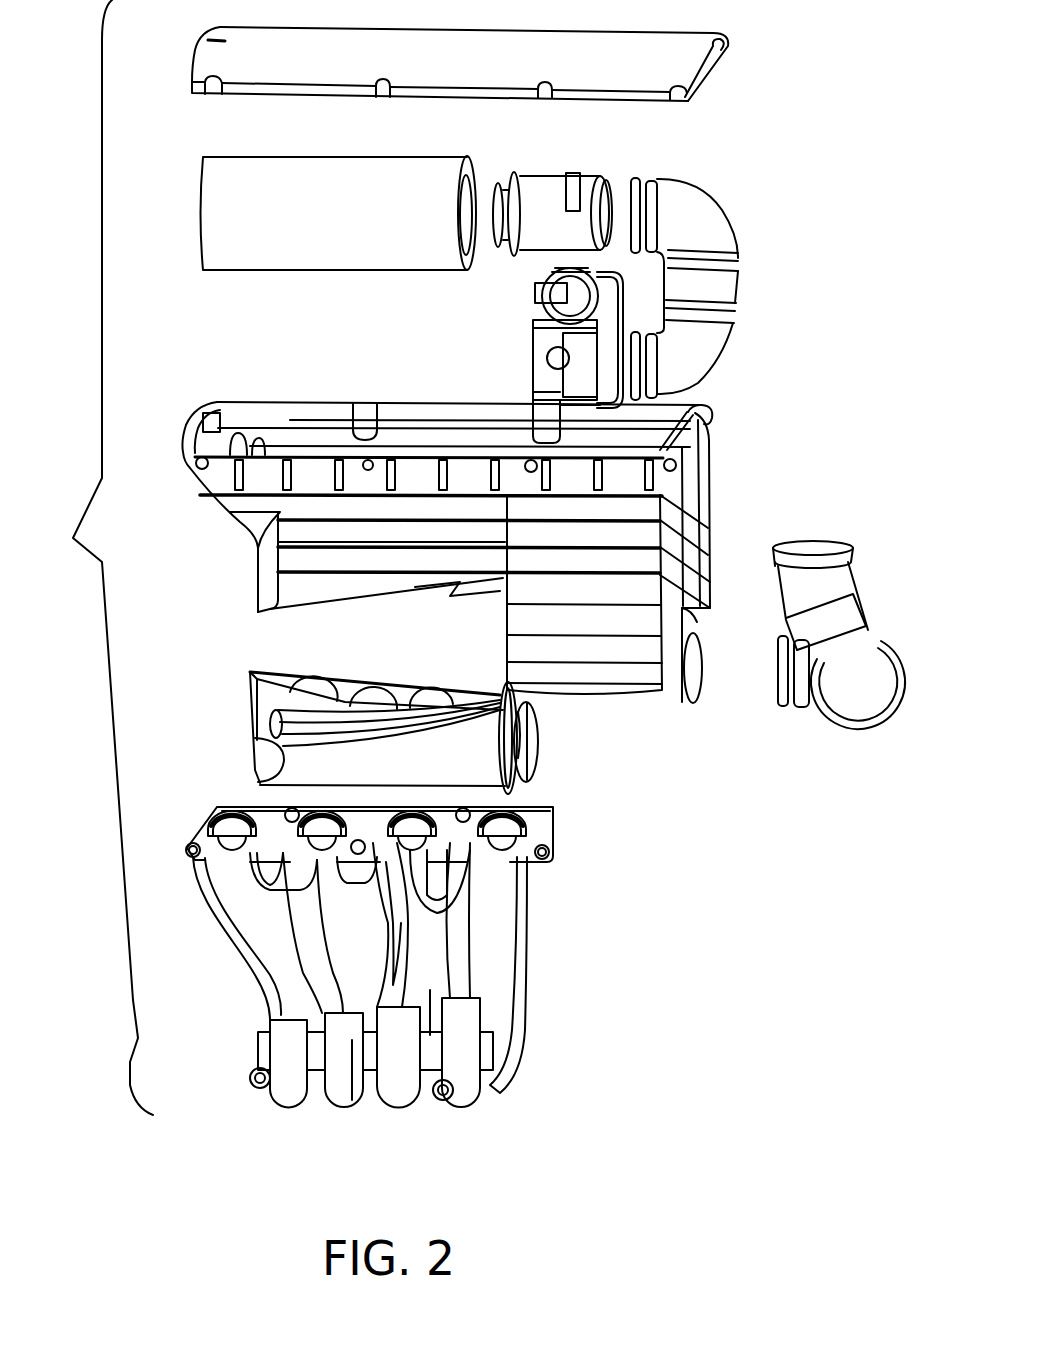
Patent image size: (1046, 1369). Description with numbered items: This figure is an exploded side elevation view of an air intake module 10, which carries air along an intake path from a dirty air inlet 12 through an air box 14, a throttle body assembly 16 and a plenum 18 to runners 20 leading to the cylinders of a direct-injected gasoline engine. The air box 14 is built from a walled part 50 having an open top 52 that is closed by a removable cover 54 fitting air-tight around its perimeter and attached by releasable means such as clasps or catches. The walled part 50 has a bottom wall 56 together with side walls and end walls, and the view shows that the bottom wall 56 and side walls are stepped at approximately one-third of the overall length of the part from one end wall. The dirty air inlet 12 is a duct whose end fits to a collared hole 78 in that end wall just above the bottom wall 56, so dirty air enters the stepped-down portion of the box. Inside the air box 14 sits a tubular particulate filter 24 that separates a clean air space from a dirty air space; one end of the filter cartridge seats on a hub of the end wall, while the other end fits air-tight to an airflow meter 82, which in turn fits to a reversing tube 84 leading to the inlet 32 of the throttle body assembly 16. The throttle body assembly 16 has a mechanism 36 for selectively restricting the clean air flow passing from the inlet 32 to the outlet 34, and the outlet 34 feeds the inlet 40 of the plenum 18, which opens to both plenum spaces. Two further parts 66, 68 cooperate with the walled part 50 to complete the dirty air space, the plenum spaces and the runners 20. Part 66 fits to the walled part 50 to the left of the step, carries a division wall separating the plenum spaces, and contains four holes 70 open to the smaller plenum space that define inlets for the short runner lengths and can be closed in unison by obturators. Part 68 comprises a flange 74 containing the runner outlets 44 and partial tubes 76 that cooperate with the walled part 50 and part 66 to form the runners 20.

The air intake module 10 is at (98, 557).
The dirty air inlet 12 is at (872, 606).
The air box 14 is at (192, 398).
The throttle body assembly 16 is at (530, 322).
The plenum 18 is at (243, 762).
The runners 20 is at (270, 997).
The tubular particulate filter 24 is at (292, 150).
The inlet 32 is at (598, 352).
The outlet 34 is at (540, 355).
The mechanism 36 is at (548, 372).
The inlet 40 is at (538, 765).
The runner outlets 44 is at (272, 896).
The walled part 50 is at (700, 470).
The open top 52 is at (345, 412).
The removable cover 54 is at (690, 85).
The bottom wall 56 is at (610, 693).
The part 66 is at (251, 672).
The part 68 is at (292, 1107).
The holes 70 is at (305, 680).
The flange 74 is at (556, 833).
The partial tubes 76 is at (268, 955).
The collared hole 78 is at (710, 652).
The airflow meter 82 is at (590, 162).
The reversing tube 84 is at (732, 200).